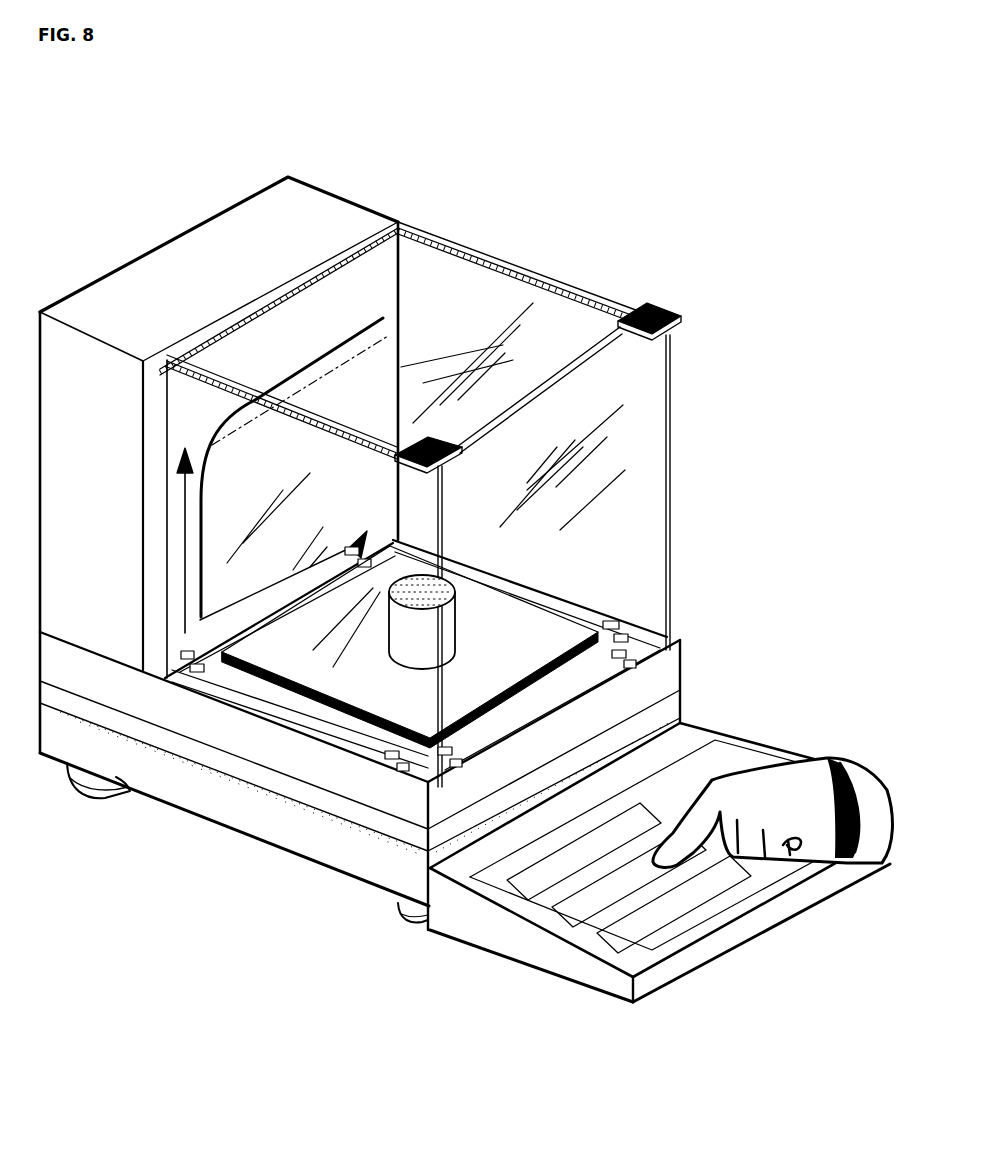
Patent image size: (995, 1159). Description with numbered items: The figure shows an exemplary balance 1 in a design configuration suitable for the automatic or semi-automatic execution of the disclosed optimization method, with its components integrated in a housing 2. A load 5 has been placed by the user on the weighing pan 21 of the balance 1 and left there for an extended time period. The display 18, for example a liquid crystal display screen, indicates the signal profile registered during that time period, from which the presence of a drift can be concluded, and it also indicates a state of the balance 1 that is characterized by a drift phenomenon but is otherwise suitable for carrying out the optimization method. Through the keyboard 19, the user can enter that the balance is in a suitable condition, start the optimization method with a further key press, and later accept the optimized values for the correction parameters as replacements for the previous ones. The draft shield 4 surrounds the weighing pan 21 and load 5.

The balance 1 is at (123, 242).
The housing 2 is at (245, 813).
The draft shield 4 is at (563, 275).
The load 5 is at (448, 622).
The display 18 is at (293, 303).
The keyboard 19 is at (707, 775).
The weighing pan 21 is at (535, 630).